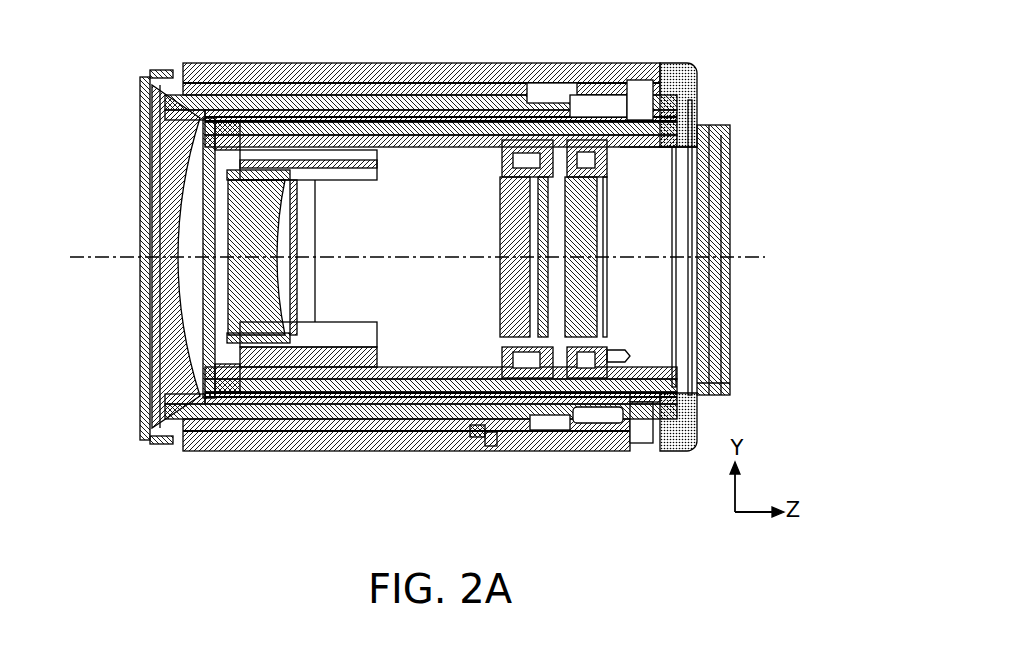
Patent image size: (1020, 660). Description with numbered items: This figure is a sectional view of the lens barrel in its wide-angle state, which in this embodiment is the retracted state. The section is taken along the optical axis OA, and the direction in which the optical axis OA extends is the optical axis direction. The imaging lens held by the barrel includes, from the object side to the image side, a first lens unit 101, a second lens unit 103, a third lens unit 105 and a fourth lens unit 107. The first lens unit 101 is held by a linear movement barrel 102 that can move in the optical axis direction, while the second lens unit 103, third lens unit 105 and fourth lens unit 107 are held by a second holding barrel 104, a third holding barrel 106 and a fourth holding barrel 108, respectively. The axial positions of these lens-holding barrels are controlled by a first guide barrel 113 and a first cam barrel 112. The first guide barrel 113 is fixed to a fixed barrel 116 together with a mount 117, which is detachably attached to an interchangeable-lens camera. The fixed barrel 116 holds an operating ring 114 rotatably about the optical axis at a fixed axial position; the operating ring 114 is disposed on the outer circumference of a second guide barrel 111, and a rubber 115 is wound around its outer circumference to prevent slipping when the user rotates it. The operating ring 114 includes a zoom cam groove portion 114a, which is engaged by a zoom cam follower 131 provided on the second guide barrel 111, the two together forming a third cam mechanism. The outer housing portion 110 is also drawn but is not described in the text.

The optical axis OA is at (78, 258).
The first lens unit 101 is at (177, 370).
The linear movement barrel 102 is at (257, 327).
The second lens unit 103 is at (205, 455).
The second holding barrel 104 is at (287, 457).
The third lens unit 105 is at (500, 458).
The third holding barrel 106 is at (530, 460).
The fourth lens unit 107 is at (572, 420).
The fourth holding barrel 108 is at (600, 457).
The housing 110 is at (273, 67).
The second guide barrel 111 is at (330, 67).
The first cam barrel 112 is at (368, 67).
The first guide barrel 113 is at (423, 66).
The operating ring 114 is at (528, 65).
The zoom cam groove portion 114a is at (493, 438).
The rubber 115 is at (472, 67).
The fixed barrel 116 is at (655, 63).
The mount 117 is at (707, 122).
The zoom cam follower 131 is at (488, 440).